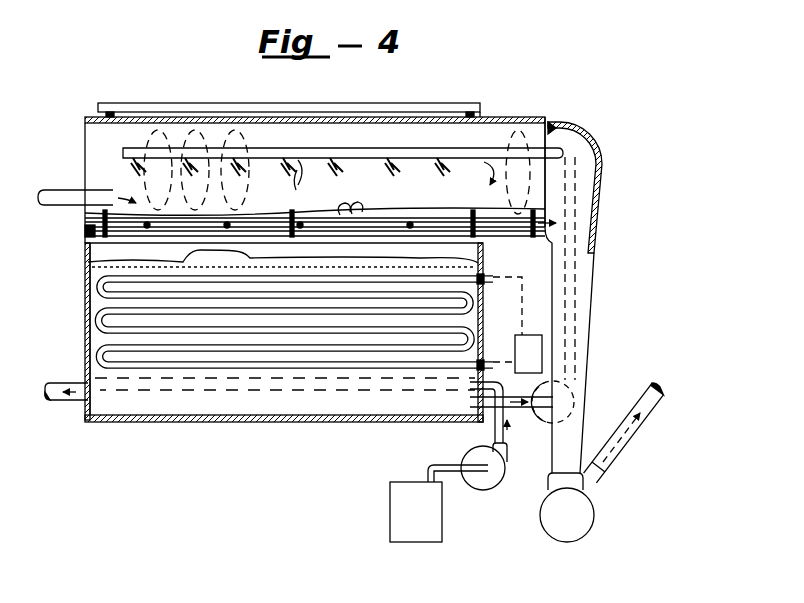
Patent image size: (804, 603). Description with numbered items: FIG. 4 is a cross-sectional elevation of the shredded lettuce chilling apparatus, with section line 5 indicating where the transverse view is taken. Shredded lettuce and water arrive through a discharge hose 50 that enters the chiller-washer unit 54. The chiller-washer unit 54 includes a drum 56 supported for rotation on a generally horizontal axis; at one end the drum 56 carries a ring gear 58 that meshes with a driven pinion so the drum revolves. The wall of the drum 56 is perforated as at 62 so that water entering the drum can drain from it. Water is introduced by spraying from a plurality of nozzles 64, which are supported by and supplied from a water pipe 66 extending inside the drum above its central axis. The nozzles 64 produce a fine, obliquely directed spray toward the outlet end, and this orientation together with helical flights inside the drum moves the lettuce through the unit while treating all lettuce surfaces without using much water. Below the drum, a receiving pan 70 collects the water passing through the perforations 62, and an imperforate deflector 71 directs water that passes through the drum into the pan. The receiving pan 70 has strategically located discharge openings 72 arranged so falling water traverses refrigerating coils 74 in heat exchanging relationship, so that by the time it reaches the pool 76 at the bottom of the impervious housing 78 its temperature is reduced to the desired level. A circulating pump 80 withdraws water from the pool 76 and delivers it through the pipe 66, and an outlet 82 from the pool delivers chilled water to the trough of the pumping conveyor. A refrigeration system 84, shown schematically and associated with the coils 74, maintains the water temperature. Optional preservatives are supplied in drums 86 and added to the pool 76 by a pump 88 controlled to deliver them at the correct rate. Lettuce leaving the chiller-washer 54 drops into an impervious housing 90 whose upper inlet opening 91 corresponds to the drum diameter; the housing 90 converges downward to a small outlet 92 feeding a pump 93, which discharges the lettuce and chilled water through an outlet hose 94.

The section line 5- 5 is at (127, 112).
The discharge hose 50 is at (54, 190).
The chiller-washer unit 54 is at (445, 95).
The drum 56 is at (512, 117).
The ring gear 58 is at (85, 228).
The perforations 62 is at (345, 206).
The nozzles 64 is at (290, 170).
The water pipe 66 is at (393, 156).
The receiving pan 70 is at (88, 272).
The imperforate deflector 71 is at (184, 112).
The discharge openings 72 is at (283, 252).
The refrigerating coils 74 is at (105, 325).
The pool 76 is at (100, 374).
The impervious housing 78 is at (150, 422).
The circulating pump 80 is at (580, 382).
The outlet 82 is at (55, 401).
The refrigeration system 84 is at (515, 343).
The drums 86 is at (430, 537).
The pump 88 is at (490, 488).
The impervious housing 90 is at (601, 180).
The upper inlet opening 91 is at (558, 127).
The outlet 92 is at (552, 469).
The pump 93 is at (563, 538).
The outlet hose 94 is at (620, 456).